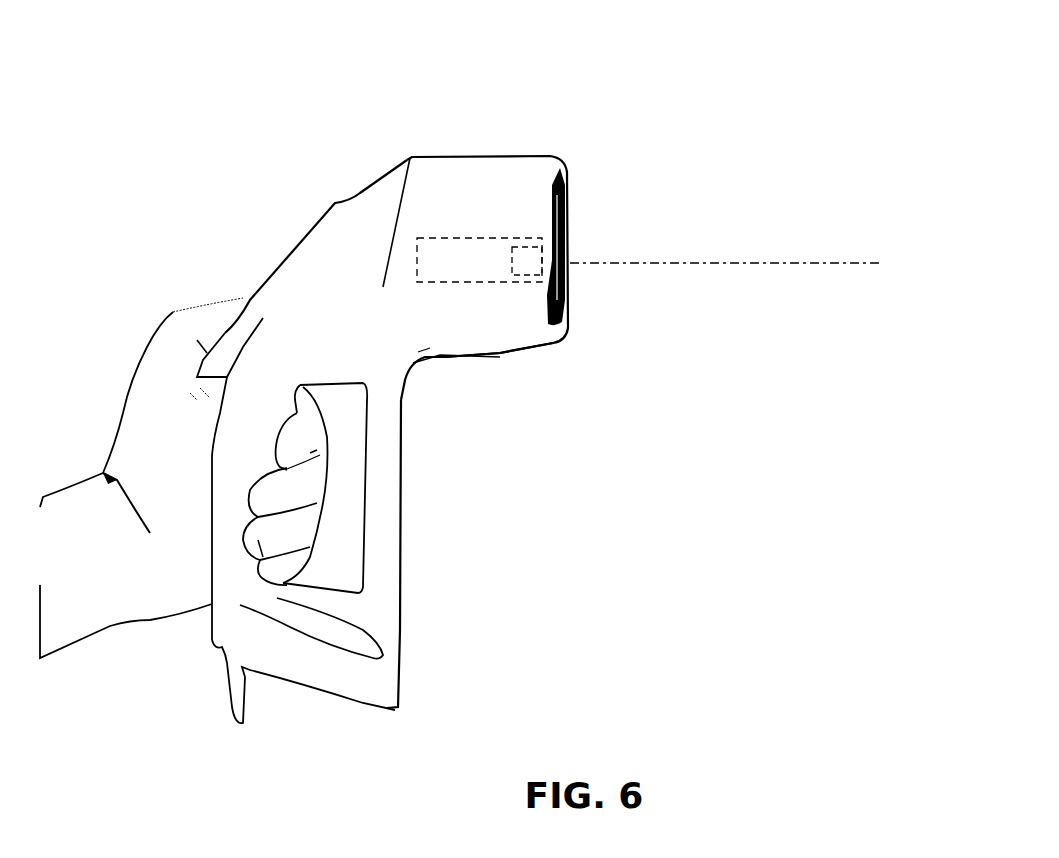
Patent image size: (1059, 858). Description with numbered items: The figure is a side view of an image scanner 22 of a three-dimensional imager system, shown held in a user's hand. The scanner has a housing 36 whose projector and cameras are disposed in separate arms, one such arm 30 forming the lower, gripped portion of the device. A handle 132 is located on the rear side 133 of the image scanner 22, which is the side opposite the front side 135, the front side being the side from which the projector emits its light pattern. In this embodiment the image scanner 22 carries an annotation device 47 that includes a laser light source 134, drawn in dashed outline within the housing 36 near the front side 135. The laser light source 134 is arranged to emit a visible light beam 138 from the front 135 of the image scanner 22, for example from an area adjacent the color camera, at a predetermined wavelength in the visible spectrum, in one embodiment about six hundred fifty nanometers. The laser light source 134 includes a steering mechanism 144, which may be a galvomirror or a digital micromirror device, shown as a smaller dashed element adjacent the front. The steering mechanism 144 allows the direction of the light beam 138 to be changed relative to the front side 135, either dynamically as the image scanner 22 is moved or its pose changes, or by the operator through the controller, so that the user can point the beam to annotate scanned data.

The image scanner 22 is at (542, 365).
The housing 36 is at (458, 153).
The handle 132 is at (303, 263).
The rear side 133 is at (173, 225).
The laser light source 134 is at (507, 283).
The steering mechanism 144 is at (525, 247).
The light beam 138 is at (830, 262).
The annotation device 47 is at (577, 277).
The front side 135 is at (583, 389).
The arm 30 is at (399, 645).